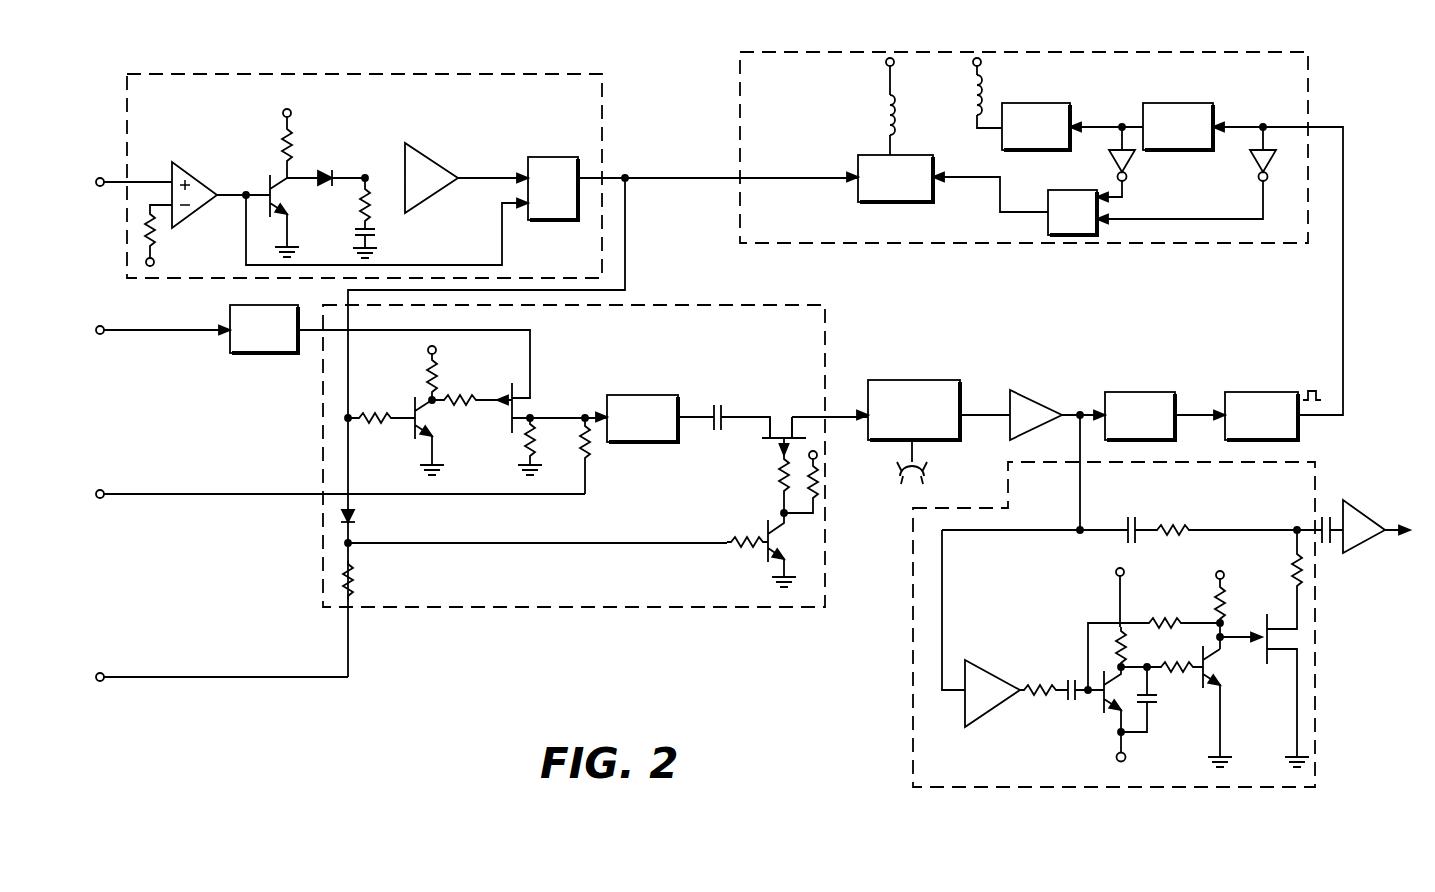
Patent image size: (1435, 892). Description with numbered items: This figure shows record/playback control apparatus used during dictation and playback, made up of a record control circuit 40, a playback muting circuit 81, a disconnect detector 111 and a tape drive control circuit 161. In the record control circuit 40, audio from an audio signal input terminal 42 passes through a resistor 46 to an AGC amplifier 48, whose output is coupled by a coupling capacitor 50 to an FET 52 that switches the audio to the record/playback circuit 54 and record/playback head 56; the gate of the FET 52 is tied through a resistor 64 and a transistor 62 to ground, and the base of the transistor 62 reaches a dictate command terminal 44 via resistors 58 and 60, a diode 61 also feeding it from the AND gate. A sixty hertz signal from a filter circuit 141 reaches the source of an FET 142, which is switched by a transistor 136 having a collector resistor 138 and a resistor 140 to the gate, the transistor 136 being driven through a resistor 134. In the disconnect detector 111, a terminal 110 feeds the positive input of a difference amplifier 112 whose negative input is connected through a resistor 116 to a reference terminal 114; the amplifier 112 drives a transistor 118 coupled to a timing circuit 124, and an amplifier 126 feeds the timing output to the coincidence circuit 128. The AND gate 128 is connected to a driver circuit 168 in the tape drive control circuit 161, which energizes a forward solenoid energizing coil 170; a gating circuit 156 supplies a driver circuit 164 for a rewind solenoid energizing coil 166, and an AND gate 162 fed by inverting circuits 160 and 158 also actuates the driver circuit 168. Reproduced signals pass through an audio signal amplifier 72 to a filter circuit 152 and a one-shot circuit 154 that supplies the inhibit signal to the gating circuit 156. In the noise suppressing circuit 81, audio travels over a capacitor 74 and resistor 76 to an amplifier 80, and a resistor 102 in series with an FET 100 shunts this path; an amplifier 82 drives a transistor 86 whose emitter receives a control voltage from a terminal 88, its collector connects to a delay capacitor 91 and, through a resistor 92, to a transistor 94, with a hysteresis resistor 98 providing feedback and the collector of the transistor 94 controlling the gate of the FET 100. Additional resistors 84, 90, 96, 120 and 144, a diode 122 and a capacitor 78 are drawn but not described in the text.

The record control circuit 40 is at (574, 456).
The audio signal input terminal 42 is at (104, 490).
The dictate command terminal 44 is at (105, 674).
The resistor 46 is at (591, 452).
The AGC amplifier 48 is at (662, 443).
The coupling capacitor 50 is at (723, 425).
The field effect transistor 52 is at (762, 444).
The record/playback circuit 54 is at (902, 380).
The record/playback head 56 is at (894, 472).
The resistor 58 is at (352, 583).
The resistor 60 is at (740, 540).
The diode 61 is at (353, 517).
The transistor 62 is at (776, 530).
The resistor 64 is at (781, 480).
The audio signal amplifier 72 is at (1028, 390).
The capacitor 74 is at (1134, 517).
The resistor 76 is at (1166, 528).
The capacitor 78 is at (1333, 516).
The amplifier 80 is at (1360, 548).
The playback muting circuit 81 is at (1114, 624).
The amplifier 82 is at (986, 665).
The resistor 84 is at (1034, 698).
The transistor 86 is at (1108, 672).
The terminal 88 is at (1126, 759).
The resistor 90 is at (1128, 650).
The delay capacitor 91 is at (1151, 708).
The resistor 92 is at (1175, 673).
The transistor 94 is at (1210, 656).
The resistor 96 is at (1216, 592).
The hysteresis resistor 98 is at (1160, 620).
The field effect transistor 100 is at (1276, 599).
The resistor 102 is at (1294, 563).
The terminal 110 is at (103, 188).
The disconnect detector 111 is at (364, 176).
The amplifier 112 is at (200, 218).
The terminal 114 is at (154, 265).
The resistor 116 is at (155, 233).
The transistor 118 is at (276, 204).
The resistor 120 is at (291, 138).
The diode 122 is at (330, 172).
The timing circuit 124 is at (399, 218).
The amplifier 126 is at (430, 160).
The coincidence circuit 128 is at (556, 157).
The resistor 134 is at (378, 412).
The transistor 136 is at (424, 422).
The collector resistor 138 is at (437, 368).
The resistor 140 is at (470, 396).
The filter circuit 141 is at (266, 354).
The field effect transistor 142 is at (518, 392).
The resistor 144 is at (522, 440).
The filter circuit 152 is at (1130, 392).
The one-shot circuit 154 is at (1267, 380).
The gating circuit 156 is at (1225, 85).
The inverting circuit 158 is at (1256, 175).
The inverting circuit 160 is at (1130, 164).
The tape drive control circuit 161 is at (1024, 148).
The AND gate 162 is at (1080, 176).
The driver circuit 164 is at (1065, 88).
The rewind solenoid energizing coil 166 is at (982, 86).
The driver circuit 168 is at (935, 160).
The forward solenoid energizing coil 170 is at (888, 102).